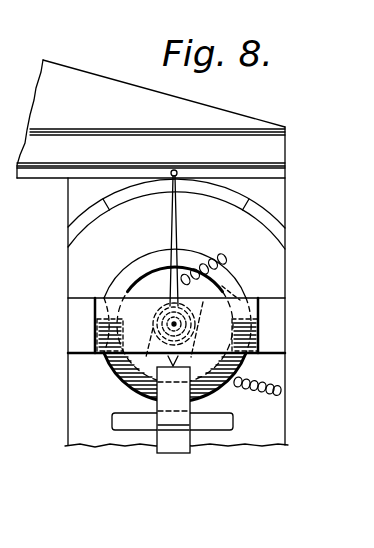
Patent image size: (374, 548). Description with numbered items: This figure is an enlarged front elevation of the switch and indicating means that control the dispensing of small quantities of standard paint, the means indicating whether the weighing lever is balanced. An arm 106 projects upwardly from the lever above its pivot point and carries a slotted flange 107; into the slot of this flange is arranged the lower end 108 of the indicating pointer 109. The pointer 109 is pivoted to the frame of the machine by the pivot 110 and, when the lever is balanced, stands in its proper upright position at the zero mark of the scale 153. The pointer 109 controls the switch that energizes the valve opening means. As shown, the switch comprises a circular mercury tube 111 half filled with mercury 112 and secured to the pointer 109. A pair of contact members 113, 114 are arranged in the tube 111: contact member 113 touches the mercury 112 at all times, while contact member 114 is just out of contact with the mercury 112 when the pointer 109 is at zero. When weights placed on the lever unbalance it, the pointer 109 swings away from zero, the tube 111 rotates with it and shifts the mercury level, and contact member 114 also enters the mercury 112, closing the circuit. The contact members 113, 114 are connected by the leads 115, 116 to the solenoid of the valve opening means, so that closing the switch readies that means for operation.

The arm 106 is at (191, 404).
The slotted flange 107 is at (190, 334).
The lower end 108 is at (196, 322).
The indicating pointer 109 is at (177, 233).
The pivot 110 is at (156, 319).
The circular mercury tube 111 is at (124, 272).
The mercury 112 is at (130, 380).
The contact member 113 is at (138, 388).
The contact member 114 is at (239, 292).
The lead 115 is at (281, 391).
The lead 116 is at (230, 255).
The scale 153 is at (273, 224).